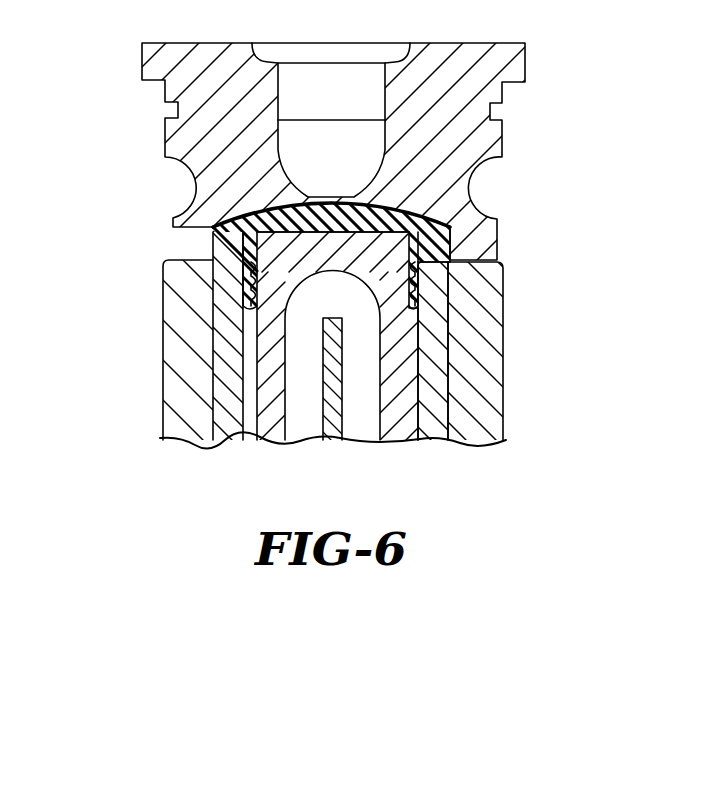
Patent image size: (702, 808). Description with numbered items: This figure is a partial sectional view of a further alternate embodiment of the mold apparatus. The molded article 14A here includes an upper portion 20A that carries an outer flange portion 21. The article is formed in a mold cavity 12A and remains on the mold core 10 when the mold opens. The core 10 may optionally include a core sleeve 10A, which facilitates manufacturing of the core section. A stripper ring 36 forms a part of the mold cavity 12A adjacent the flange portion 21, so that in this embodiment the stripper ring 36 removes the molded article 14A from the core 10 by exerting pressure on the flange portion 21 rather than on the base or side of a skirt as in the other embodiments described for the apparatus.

The upper portion 20A is at (280, 217).
The outer flange portion 21 is at (213, 231).
The molded article 14A is at (452, 254).
The mold cavity 12A is at (462, 266).
The core sleeve 10A is at (437, 323).
The mold core 10 is at (405, 382).
The stripper ring 36 is at (190, 333).